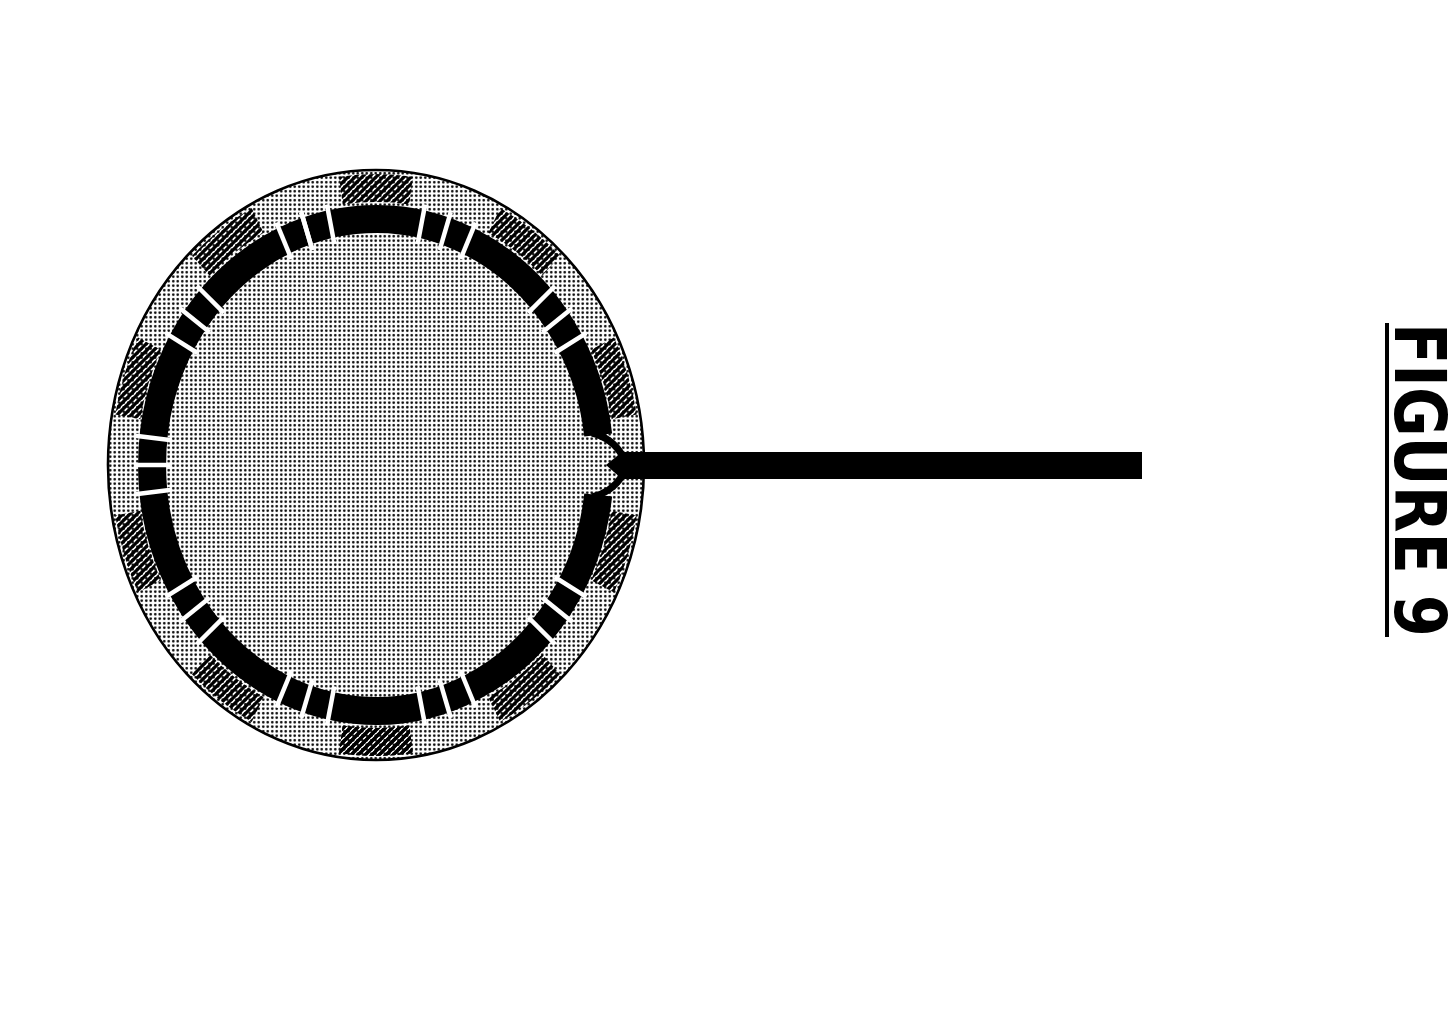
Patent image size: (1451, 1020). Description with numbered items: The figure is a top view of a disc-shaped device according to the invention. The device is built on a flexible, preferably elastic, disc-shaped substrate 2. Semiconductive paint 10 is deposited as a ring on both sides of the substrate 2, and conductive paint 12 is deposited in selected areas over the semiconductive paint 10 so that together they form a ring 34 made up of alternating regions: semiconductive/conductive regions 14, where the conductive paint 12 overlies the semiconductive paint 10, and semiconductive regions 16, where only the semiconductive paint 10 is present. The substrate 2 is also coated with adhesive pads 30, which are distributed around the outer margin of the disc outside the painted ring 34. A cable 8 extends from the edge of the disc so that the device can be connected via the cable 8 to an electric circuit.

The substrate 2 is at (466, 195).
The semiconductive paint 10 is at (580, 311).
The conductive paint 12 is at (592, 322).
The cable 8 is at (690, 479).
The adhesive pads 30 is at (493, 701).
The ring of alternate semiconductive/conductive regions 34 is at (313, 210).
The semiconductive region 16 is at (277, 703).
The semiconductive/conductive region 14 is at (361, 732).